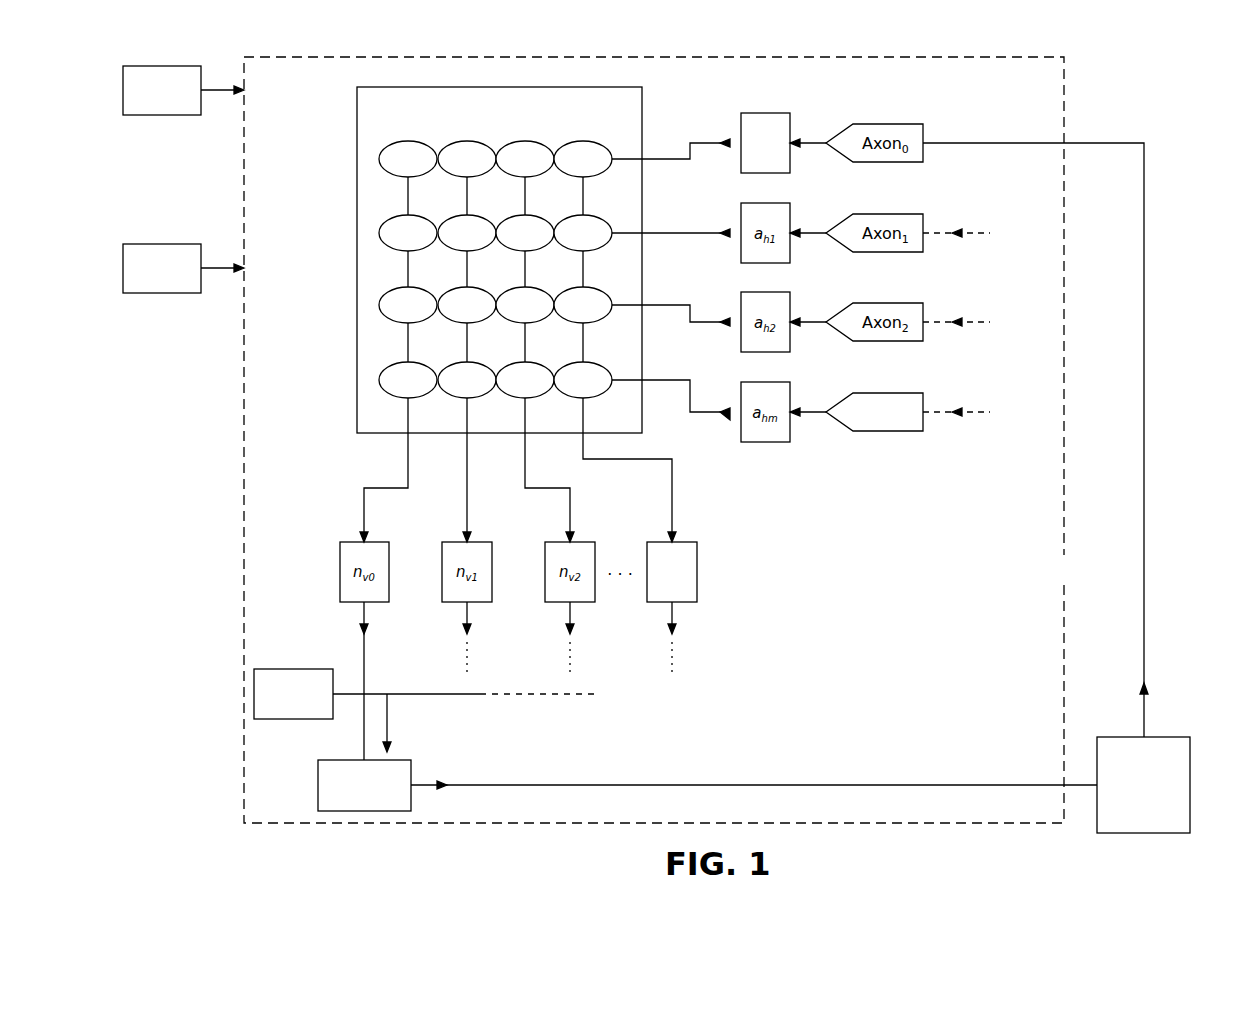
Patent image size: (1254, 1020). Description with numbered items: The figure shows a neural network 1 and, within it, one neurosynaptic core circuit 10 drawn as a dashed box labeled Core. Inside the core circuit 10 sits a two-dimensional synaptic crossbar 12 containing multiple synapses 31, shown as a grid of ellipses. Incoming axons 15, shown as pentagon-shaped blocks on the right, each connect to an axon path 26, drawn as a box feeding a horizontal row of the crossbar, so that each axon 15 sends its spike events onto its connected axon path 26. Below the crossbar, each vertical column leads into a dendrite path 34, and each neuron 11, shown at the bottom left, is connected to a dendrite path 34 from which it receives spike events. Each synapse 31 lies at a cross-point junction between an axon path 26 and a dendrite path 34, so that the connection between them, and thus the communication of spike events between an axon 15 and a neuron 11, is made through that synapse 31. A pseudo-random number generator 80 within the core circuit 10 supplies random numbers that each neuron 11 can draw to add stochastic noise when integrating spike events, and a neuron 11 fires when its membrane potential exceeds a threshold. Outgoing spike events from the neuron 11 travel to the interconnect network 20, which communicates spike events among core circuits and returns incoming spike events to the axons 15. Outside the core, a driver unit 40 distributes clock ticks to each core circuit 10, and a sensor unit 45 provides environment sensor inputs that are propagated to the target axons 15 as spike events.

The neural network 1 is at (1190, 150).
The core circuit 10 is at (1064, 100).
The neuron 11 is at (400, 760).
The synaptic crossbar 12 is at (520, 298).
The axon 15 is at (905, 431).
The interconnect network 20 is at (1165, 737).
The axon path 26 is at (785, 173).
The synapse 31 is at (386, 172).
The dendrite path 34 is at (690, 602).
The driver unit 40 is at (162, 115).
The sensor unit 45 is at (162, 293).
The pseudo-random number generator 80 is at (295, 669).